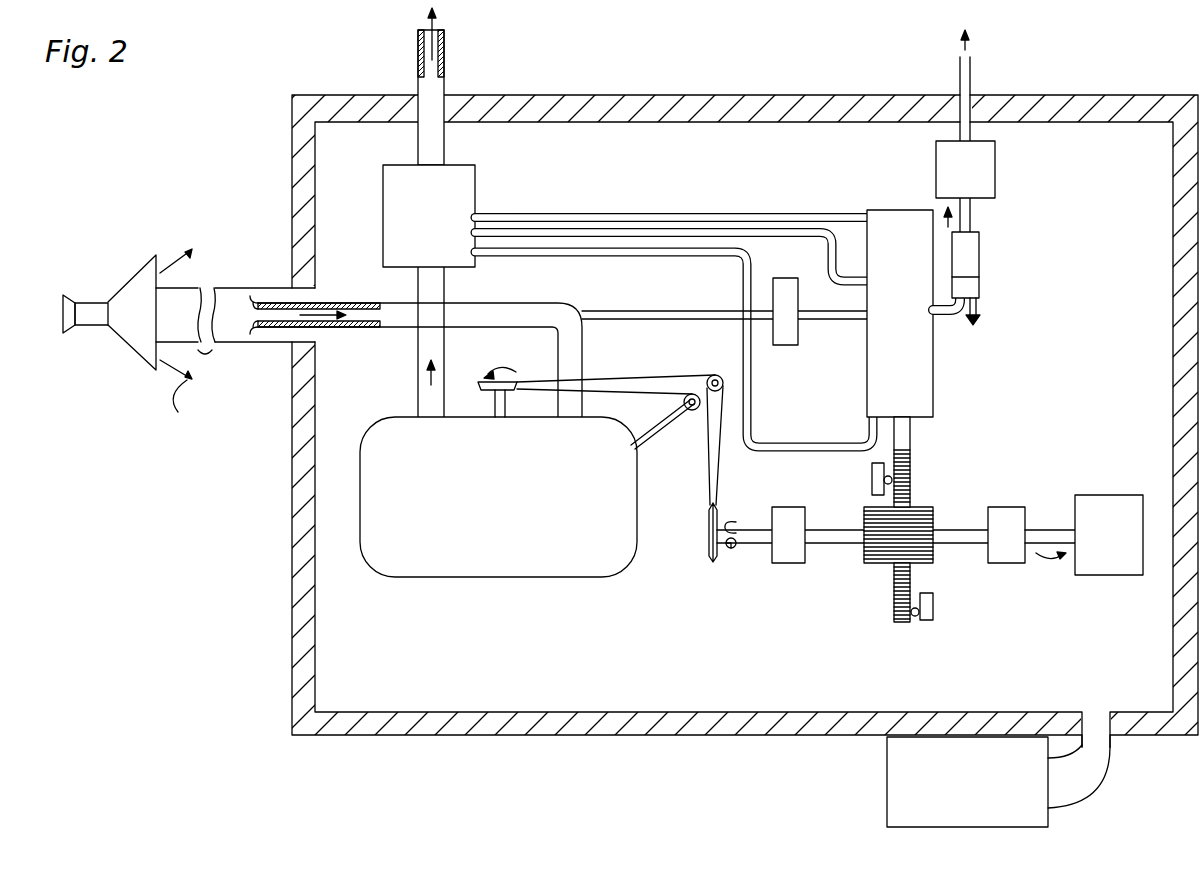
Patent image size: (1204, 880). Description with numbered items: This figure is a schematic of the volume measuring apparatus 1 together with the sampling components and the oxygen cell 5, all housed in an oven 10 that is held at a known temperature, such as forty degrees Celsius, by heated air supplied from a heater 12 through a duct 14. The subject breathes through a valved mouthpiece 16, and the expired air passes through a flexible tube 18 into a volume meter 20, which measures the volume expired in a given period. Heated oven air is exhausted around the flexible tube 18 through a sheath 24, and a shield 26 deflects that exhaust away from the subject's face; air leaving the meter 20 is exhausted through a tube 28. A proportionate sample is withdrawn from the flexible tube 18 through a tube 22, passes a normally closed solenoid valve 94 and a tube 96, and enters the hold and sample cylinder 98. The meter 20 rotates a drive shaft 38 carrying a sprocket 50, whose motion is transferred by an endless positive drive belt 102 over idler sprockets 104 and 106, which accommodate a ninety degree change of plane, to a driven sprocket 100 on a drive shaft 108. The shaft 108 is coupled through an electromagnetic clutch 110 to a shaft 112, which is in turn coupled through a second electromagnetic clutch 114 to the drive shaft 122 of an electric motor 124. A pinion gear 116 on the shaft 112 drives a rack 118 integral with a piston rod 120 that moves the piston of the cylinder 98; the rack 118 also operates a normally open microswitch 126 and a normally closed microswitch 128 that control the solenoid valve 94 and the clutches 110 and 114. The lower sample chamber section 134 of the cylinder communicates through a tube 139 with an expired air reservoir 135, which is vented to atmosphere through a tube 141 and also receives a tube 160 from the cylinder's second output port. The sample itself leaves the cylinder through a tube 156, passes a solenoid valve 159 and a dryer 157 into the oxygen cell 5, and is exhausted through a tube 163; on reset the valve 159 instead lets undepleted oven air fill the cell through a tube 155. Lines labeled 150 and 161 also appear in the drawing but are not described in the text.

The volume measuring apparatus 1 is at (875, 88).
The oxygen cell 5 is at (905, 152).
The oven 10 is at (762, 680).
The heater 12 is at (967, 782).
The duct 14 is at (1082, 787).
The mouthpiece 16 is at (62, 306).
The flexible tube 18 is at (318, 303).
The volume meter 20 is at (498, 497).
The tube 22 is at (626, 314).
The sheath 24 is at (242, 298).
The shield 26 is at (133, 337).
The tube 28 is at (417, 287).
The drive shaft 38 is at (494, 407).
The sprocket 50 is at (512, 362).
The solenoid valve 94 is at (808, 341).
The tube 96 is at (790, 335).
The hold and sample cylinder 98 is at (905, 375).
The driven sprocket 100 is at (709, 558).
The positive drive belt 102 is at (708, 437).
The idler sprocket 104 is at (712, 378).
The idler sprocket 106 is at (683, 405).
The drive shaft 108 is at (757, 533).
The electromagnetic clutch 110 is at (790, 548).
The shaft 112 is at (838, 538).
The electromagnetic clutch 114 is at (1005, 548).
The pinion gear 116 is at (925, 555).
The rack 118 is at (912, 480).
The piston rod 120 is at (912, 432).
The drive shaft 122 is at (1055, 528).
The electric motor 124 is at (1102, 482).
The normally open microswitch 126 is at (928, 622).
The normally closed microswitch 128 is at (873, 481).
The sample chamber section 134 is at (674, 317).
The expired air reservoir 135 is at (280, 190).
The tube 139 is at (868, 424).
The tube 141 is at (434, 90).
The tube 150 is at (760, 217).
The tube 155 is at (984, 312).
The tube 156 is at (958, 316).
The dryer 157 is at (980, 272).
The solenoid valve 159 is at (1036, 286).
The tube 160 is at (806, 242).
The pipe 161 is at (972, 218).
The tube 163 is at (970, 129).